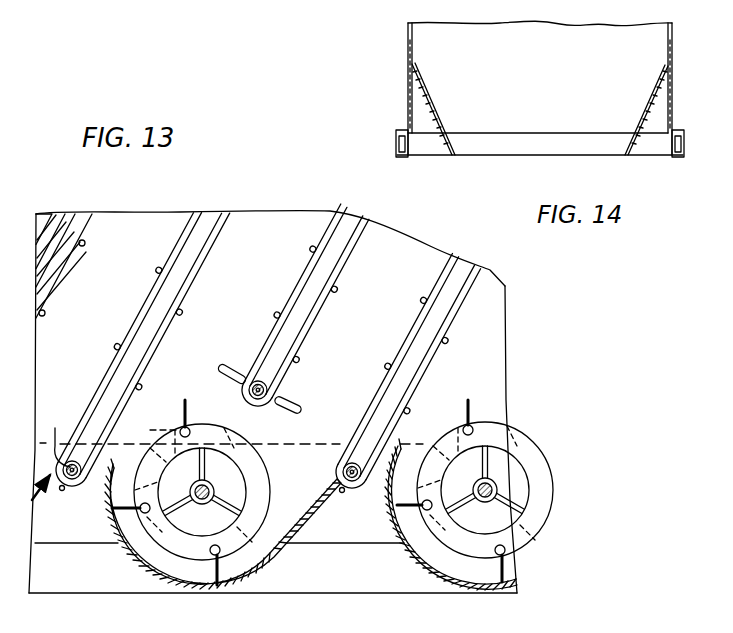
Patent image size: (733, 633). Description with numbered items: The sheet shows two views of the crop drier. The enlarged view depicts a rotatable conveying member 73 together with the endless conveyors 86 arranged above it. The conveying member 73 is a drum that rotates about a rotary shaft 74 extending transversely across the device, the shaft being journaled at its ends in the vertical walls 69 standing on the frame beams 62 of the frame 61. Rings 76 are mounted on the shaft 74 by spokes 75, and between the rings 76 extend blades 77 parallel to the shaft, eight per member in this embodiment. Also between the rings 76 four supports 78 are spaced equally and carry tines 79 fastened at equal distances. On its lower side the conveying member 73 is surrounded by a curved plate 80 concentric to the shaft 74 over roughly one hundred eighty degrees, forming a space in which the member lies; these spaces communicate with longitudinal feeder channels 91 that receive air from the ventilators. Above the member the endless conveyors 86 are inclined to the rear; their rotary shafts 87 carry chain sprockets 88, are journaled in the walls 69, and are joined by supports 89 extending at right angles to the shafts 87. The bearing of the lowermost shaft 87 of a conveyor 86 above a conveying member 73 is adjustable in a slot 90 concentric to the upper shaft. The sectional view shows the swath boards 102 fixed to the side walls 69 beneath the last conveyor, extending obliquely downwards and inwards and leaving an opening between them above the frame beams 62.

In FIG. 14, the frame 61 is at (519, 157).
In FIG. 13, the frame beams 62 is at (36, 566).
In FIG. 14, the frame beams 62 is at (395, 151).
In FIG. 13, the vertical walls 69 is at (272, 216).
In FIG. 14, the vertical walls 69 is at (406, 45).
In FIG. 13, the rotatable conveying member 73 is at (152, 546).
In FIG. 13, the rotary shaft 74 is at (208, 490).
In FIG. 13, the spokes 75 is at (202, 507).
In FIG. 13, the rings 76 is at (248, 527).
In FIG. 13, the blades 77 is at (240, 440).
In FIG. 13, the supports 78 is at (158, 429).
In FIG. 13, the tines 79 is at (183, 406).
In FIG. 13, the curved plate 80 is at (262, 584).
In FIG. 13, the endless conveyors 86 is at (180, 251).
In FIG. 13, the rotary shafts 87 is at (55, 440).
In FIG. 13, the chain sprockets 88 is at (274, 386).
In FIG. 13, the supports 89 is at (130, 360).
In FIG. 13, the slot 90 is at (302, 403).
In FIG. 13, the feeder channels 91 is at (348, 544).
In FIG. 14, the swath boards 102 is at (432, 100).